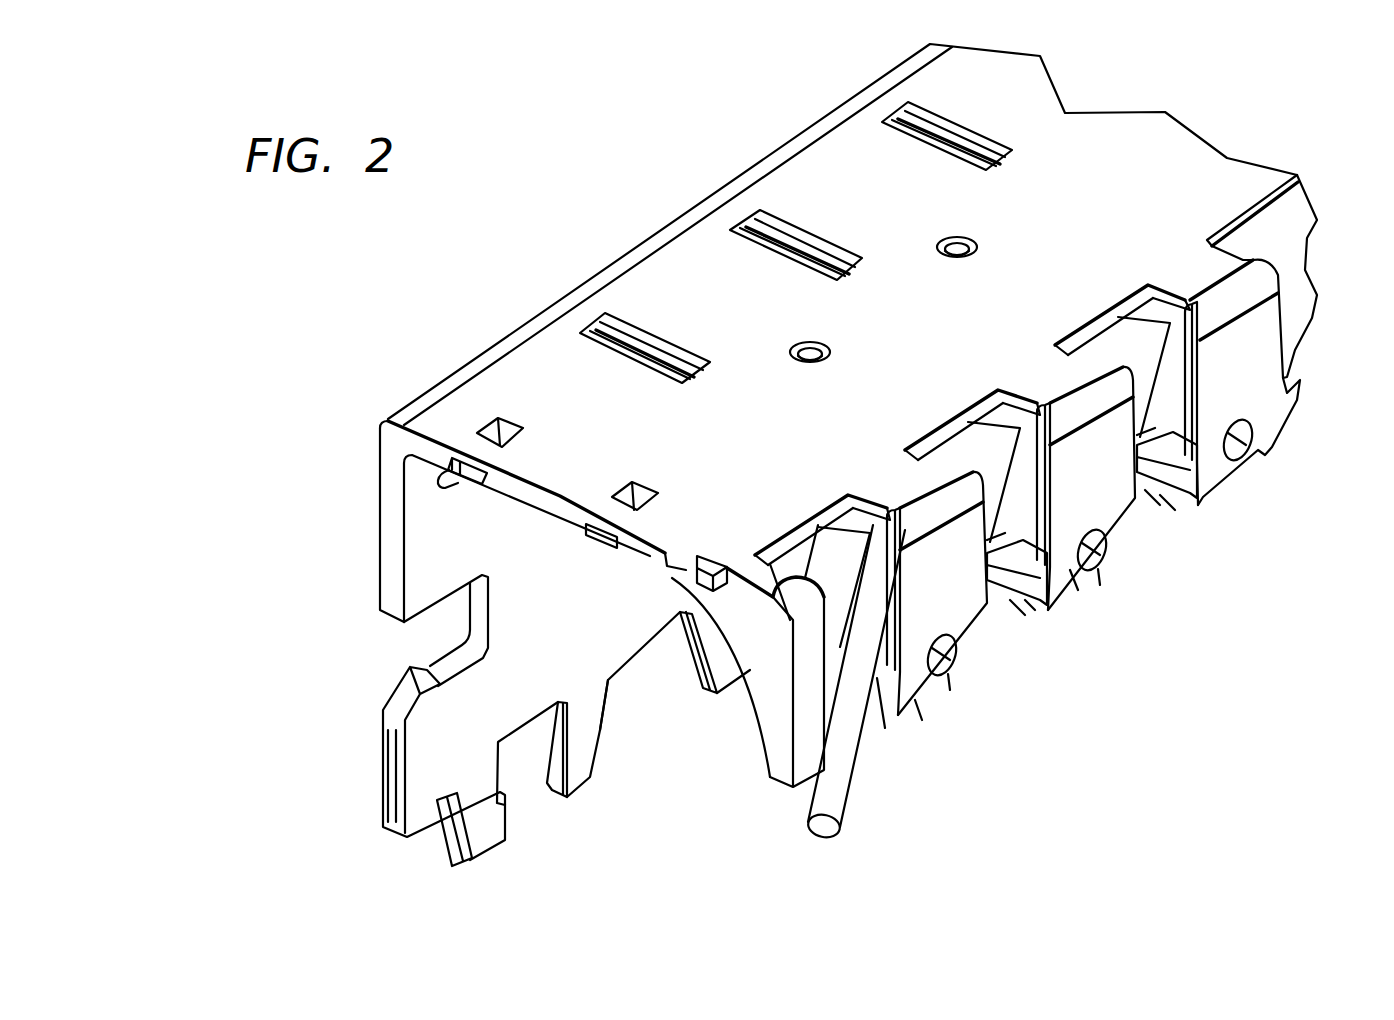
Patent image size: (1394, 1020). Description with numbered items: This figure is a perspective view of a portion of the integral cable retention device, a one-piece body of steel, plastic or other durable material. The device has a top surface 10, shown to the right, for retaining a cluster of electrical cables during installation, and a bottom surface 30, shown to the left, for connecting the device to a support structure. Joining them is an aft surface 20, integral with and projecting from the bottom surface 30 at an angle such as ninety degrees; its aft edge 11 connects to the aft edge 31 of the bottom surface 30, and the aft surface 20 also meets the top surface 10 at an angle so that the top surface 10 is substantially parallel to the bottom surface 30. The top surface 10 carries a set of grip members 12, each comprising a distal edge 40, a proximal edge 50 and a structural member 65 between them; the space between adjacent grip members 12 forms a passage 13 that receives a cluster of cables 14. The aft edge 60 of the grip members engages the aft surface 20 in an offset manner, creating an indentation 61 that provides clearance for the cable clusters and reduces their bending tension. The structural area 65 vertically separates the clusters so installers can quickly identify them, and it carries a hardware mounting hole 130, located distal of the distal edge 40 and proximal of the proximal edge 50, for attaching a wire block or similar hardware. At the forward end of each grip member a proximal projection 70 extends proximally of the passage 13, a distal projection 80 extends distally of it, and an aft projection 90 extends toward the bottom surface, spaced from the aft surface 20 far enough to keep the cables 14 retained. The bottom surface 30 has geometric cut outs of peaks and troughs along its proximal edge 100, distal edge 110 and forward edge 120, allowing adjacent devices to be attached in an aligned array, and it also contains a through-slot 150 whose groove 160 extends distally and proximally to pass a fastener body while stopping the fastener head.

The top surface 10 is at (1150, 498).
The aft edge of aft surface 11 is at (548, 508).
The grip member 12 is at (920, 715).
The passage 13 is at (838, 530).
The cluster of cables 14 is at (822, 830).
The aft surface 20 is at (668, 280).
The bottom surface 30 is at (380, 748).
The aft edge of bottom surface 31 is at (388, 565).
The distal edge 40 is at (902, 590).
The proximal edge 50 is at (978, 578).
The aft edge 60 is at (835, 497).
The indentation 61 is at (798, 555).
The structural member 65 is at (912, 553).
The proximal projection 70 is at (1018, 640).
The distal projection 80 is at (895, 690).
The aft projection 90 is at (993, 530).
The proximal edge of bottom surface 100 is at (690, 668).
The distal edge of bottom surface 110 is at (597, 728).
The forward edge 120 is at (530, 708).
The hardware mounting hole 130 is at (947, 665).
The through-slot 150 is at (485, 480).
The groove 160 is at (450, 482).